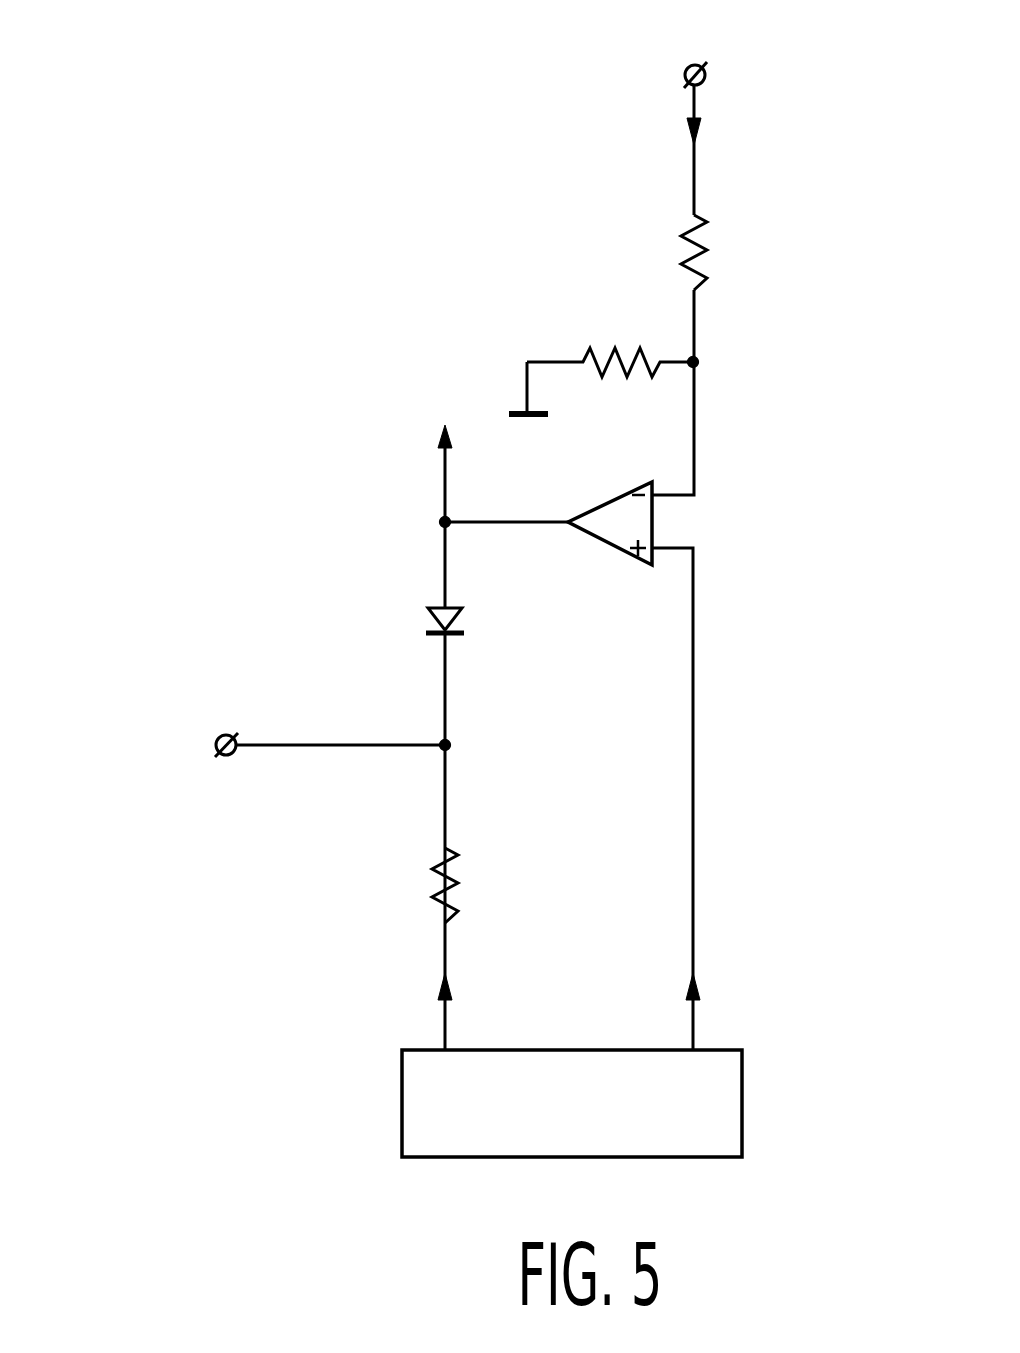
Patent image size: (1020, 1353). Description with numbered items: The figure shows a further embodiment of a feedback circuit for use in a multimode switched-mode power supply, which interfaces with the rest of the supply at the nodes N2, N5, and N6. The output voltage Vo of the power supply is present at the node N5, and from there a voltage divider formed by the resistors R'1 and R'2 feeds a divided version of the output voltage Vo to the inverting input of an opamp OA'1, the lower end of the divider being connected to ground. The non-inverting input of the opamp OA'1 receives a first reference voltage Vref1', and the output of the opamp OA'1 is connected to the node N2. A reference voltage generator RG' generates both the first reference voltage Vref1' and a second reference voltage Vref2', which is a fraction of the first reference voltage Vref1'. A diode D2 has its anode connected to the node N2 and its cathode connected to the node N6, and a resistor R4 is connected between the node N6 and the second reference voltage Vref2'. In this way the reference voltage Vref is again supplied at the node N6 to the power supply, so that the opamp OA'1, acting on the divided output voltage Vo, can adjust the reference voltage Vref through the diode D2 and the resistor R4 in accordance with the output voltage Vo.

The node N5 is at (724, 74).
The output voltage Vo is at (693, 24).
The voltage divider resistor R'1 is at (720, 252).
The voltage divider resistor R'2 is at (604, 354).
The opamp OA'1 is at (610, 553).
The node N2 is at (479, 520).
The diode D2 is at (428, 618).
The node N6 is at (329, 721).
The reference voltage Vref is at (159, 735).
The resistor R4 is at (419, 885).
The second reference voltage Vref2' is at (500, 992).
The first reference voltage Vref1' is at (748, 992).
The reference voltage generator RG' is at (534, 1103).